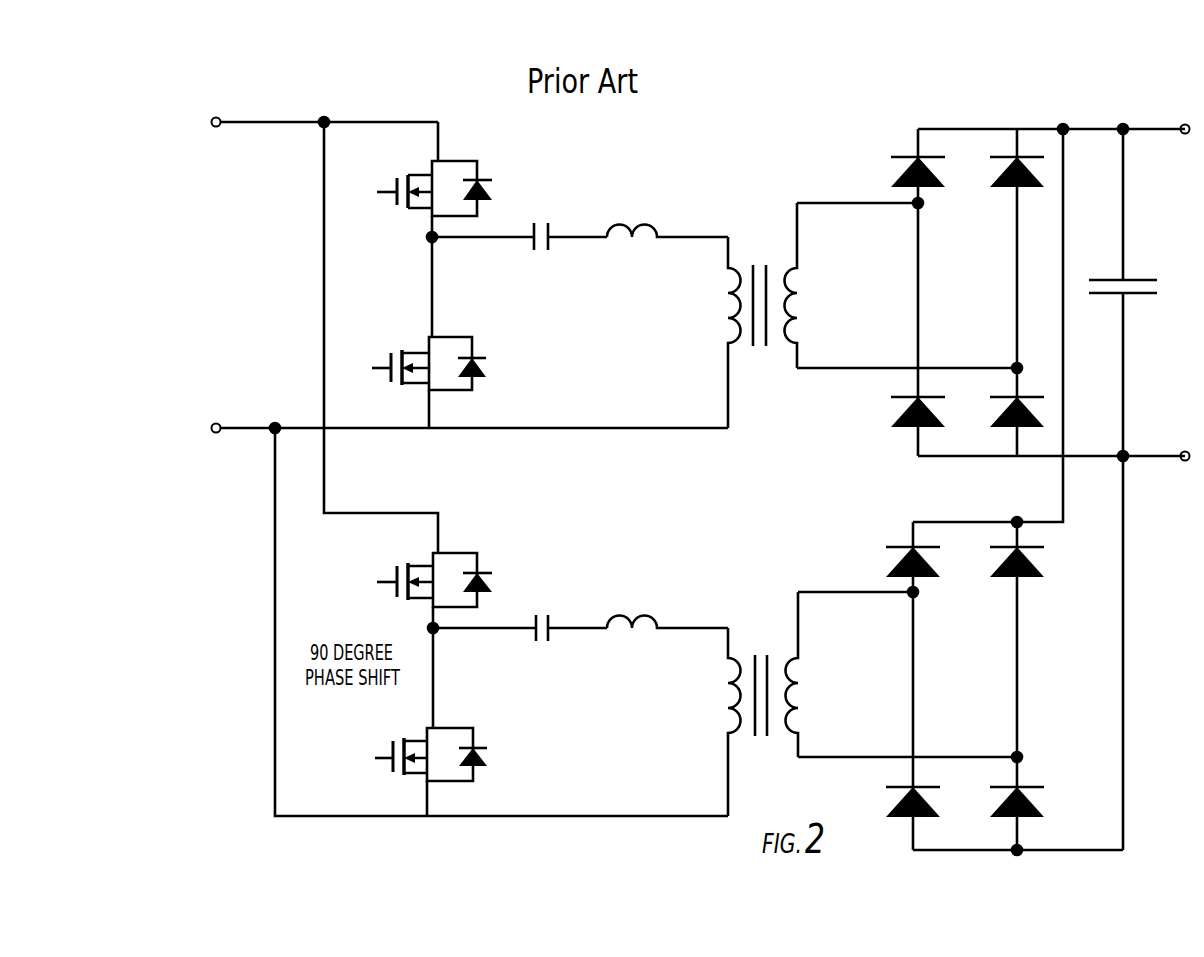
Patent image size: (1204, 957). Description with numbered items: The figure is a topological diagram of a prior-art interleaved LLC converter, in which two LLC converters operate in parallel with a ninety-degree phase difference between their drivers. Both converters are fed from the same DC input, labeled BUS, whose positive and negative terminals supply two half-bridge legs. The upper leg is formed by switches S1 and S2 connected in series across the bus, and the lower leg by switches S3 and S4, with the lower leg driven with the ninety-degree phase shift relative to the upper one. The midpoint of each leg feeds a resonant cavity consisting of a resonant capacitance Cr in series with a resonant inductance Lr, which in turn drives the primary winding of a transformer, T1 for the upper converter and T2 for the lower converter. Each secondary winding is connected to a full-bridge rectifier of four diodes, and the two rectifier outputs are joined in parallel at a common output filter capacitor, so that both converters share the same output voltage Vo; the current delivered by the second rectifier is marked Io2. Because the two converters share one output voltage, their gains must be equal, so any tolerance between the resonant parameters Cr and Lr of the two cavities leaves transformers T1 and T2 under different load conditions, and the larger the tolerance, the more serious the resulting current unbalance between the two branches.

The DC bus input BUS is at (470, 466).
The switch S1 (MOSFET with antiparallel diode) S1 is at (425, 169).
The switch S2 (MOSFET with antiparallel diode) S2 is at (421, 322).
The switch S3 (MOSFET with antiparallel diode) S3 is at (434, 624).
The switch S4 (MOSFET with antiparallel diode) S4 is at (417, 772).
The resonant capacitance Cr is at (519, 419).
The resonant inductance Lr is at (667, 412).
The transformer T1 is at (872, 313).
The transformer T2 is at (872, 702).
The output voltage / output capacitor Vo is at (1141, 489).
The output current of second rectifier Io2 is at (1007, 329).